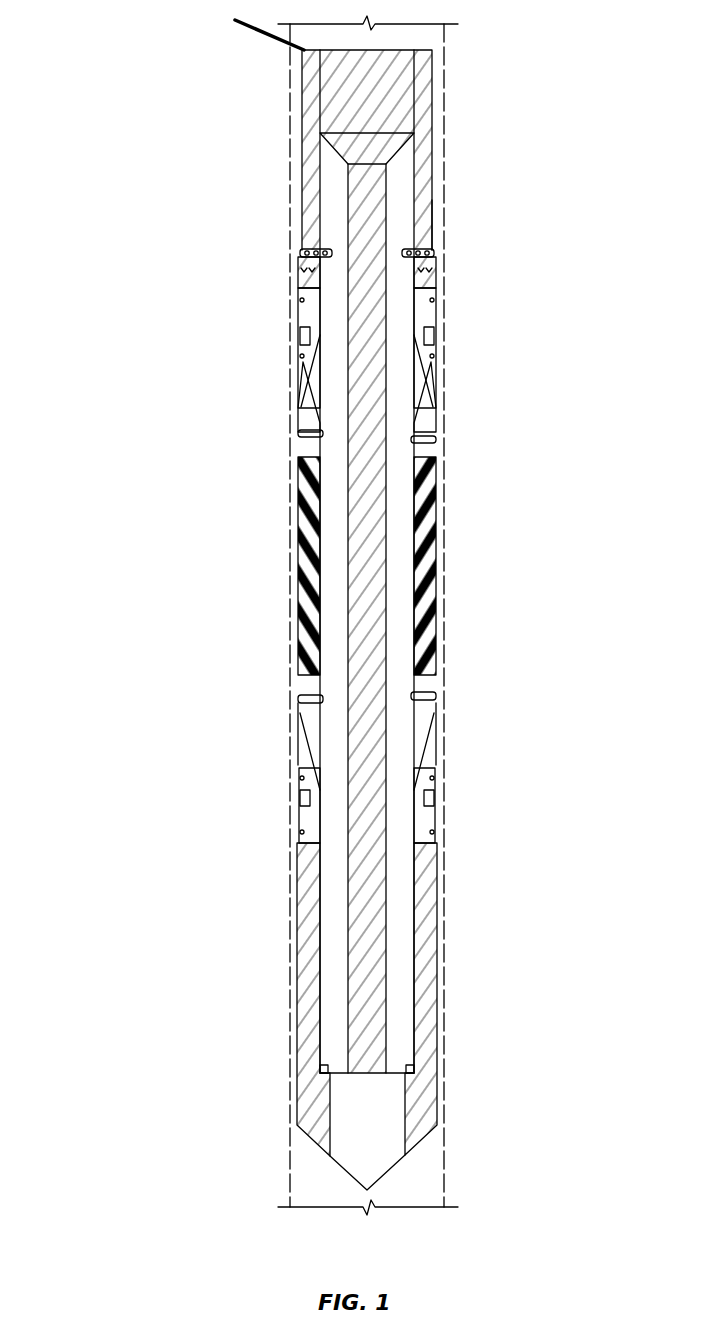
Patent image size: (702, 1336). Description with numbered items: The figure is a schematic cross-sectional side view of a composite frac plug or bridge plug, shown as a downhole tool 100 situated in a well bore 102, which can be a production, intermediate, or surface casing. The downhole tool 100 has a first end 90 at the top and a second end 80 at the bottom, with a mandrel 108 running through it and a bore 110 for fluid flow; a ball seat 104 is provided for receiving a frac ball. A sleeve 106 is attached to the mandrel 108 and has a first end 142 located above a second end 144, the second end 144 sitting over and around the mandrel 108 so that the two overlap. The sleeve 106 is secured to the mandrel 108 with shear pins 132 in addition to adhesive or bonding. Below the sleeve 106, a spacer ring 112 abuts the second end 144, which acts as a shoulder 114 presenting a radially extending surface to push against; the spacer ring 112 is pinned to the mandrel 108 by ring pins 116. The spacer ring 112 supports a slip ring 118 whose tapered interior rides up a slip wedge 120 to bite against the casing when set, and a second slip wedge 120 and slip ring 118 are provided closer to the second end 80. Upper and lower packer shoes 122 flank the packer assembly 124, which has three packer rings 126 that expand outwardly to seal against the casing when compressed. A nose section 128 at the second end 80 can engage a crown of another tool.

The second end 80 is at (232, 1093).
The first end 90 is at (237, 140).
The downhole tool 100 is at (160, 343).
The well bore 102 is at (290, 68).
The ball seat 104 is at (397, 133).
The sleeve 106 is at (444, 77).
The mandrel 108 is at (335, 993).
The bore 110 is at (367, 930).
The spacer ring 112 is at (440, 265).
The shoulder 114 is at (437, 235).
The ring pins 116 is at (298, 271).
The slip ring 118 is at (437, 328).
The slip wedge 120 is at (297, 405).
The packer shoe 122 is at (437, 462).
The packer assembly 124 is at (247, 557).
The packer rings 126 is at (437, 636).
The nose section 128 is at (420, 1095).
The shear pins 132 is at (302, 250).
The first end of sleeve 142 is at (243, 31).
The second end of sleeve 144 is at (300, 250).